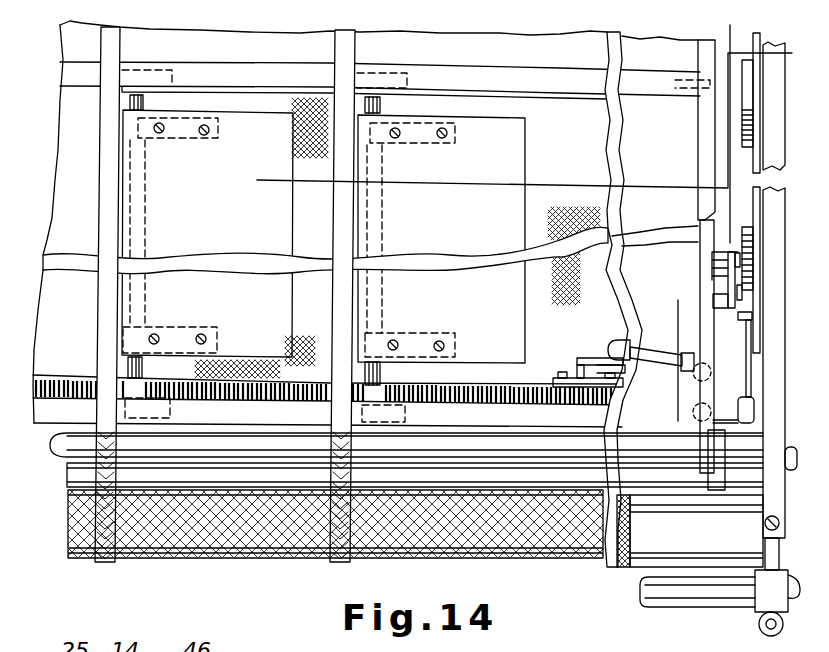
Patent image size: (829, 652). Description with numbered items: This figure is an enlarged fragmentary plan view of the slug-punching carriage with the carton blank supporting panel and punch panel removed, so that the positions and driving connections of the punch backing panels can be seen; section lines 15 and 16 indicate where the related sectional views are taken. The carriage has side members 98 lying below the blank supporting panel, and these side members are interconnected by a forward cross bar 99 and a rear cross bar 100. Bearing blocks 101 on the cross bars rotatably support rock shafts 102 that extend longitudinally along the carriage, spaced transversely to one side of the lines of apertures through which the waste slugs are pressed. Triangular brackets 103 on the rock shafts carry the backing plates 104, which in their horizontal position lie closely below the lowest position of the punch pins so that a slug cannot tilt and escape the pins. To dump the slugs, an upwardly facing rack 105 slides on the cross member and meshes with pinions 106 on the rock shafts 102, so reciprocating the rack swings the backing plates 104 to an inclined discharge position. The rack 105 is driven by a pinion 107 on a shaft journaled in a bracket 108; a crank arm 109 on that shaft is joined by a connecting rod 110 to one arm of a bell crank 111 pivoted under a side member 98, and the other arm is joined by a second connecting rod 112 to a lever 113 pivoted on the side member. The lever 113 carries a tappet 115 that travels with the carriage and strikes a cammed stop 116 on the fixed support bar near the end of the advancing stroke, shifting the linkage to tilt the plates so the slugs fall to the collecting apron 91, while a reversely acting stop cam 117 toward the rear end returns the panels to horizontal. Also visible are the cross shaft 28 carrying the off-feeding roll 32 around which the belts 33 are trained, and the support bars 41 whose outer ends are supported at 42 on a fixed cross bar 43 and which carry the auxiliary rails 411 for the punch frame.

The section line 15- 15 is at (257, 178).
The section line 16- 16 is at (730, 25).
The cross shaft 28 is at (637, 550).
The off-feeding roll 32 is at (245, 550).
The belts 33 is at (103, 563).
The support bars 41 is at (772, 547).
The support of bar outer end 42 is at (765, 602).
The fixed cross bar 43 is at (655, 600).
The collecting apron 91 is at (542, 179).
The side members 98 is at (705, 123).
The forward cross bar 99 is at (238, 410).
The rear cross bar 100 is at (546, 86).
The bearing blocks 101 is at (173, 93).
The rock shafts 102 is at (140, 90).
The triangular brackets 103 is at (172, 143).
The backing plates 104 is at (194, 244).
The rack 105 is at (465, 395).
The pinions 106 is at (148, 382).
The pinion 107 is at (593, 404).
The bracket 108 is at (563, 372).
The crank arm 109 is at (605, 343).
The connecting rod 110 is at (722, 300).
The bell crank 111 is at (746, 340).
The second connecting rod 112 is at (745, 382).
The lever 113 is at (728, 288).
The tappet 115 is at (742, 320).
The cammed stop 116 is at (745, 240).
The stop cam 117 is at (743, 95).
The auxiliary rails 411 is at (757, 160).